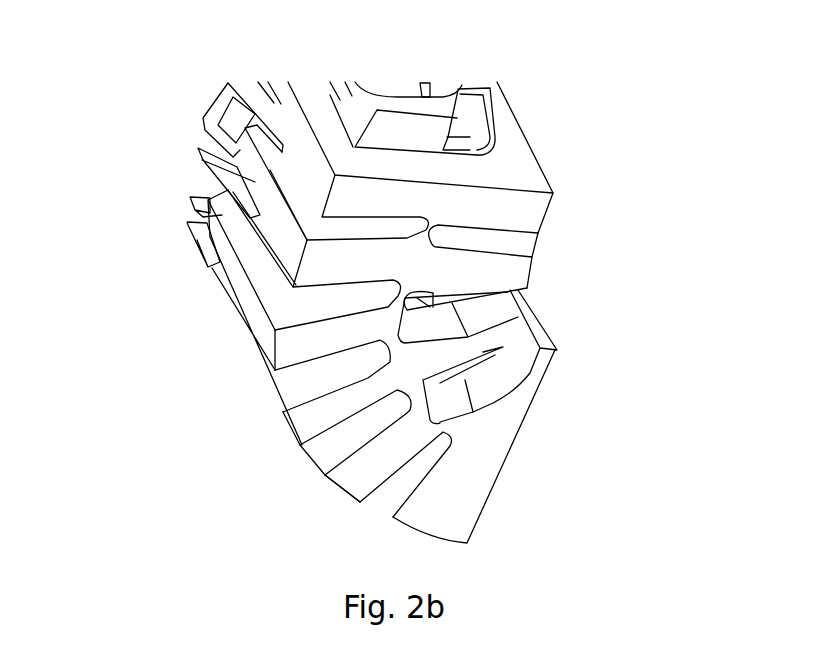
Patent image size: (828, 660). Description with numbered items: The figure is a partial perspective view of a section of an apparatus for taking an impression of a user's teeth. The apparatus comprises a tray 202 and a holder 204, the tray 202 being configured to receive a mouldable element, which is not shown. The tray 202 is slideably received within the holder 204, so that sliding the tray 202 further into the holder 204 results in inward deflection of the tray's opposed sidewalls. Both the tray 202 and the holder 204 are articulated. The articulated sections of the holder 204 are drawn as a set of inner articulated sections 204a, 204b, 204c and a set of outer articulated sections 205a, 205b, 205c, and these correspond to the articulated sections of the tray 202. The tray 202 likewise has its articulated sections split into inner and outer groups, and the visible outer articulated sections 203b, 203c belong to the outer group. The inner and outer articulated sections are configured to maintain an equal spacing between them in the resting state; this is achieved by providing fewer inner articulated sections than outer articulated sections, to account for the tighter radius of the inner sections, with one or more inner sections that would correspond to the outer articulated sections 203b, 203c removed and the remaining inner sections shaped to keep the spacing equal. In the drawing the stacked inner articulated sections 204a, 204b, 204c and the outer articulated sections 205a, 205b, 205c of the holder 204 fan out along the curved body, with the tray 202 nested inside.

The tray 202 is at (458, 84).
The holder 204 is at (535, 128).
The inner articulated section of the holder 204a is at (533, 210).
The inner articulated section of the holder 204b is at (533, 270).
The inner articulated section of the holder 204c is at (517, 328).
The outer articulated section of the tray 203b is at (212, 122).
The outer articulated section of the tray 203c is at (212, 183).
The outer articulated section of the holder 205a is at (285, 103).
The outer articulated section of the holder 205b is at (213, 125).
The outer articulated section of the holder 205c is at (215, 242).